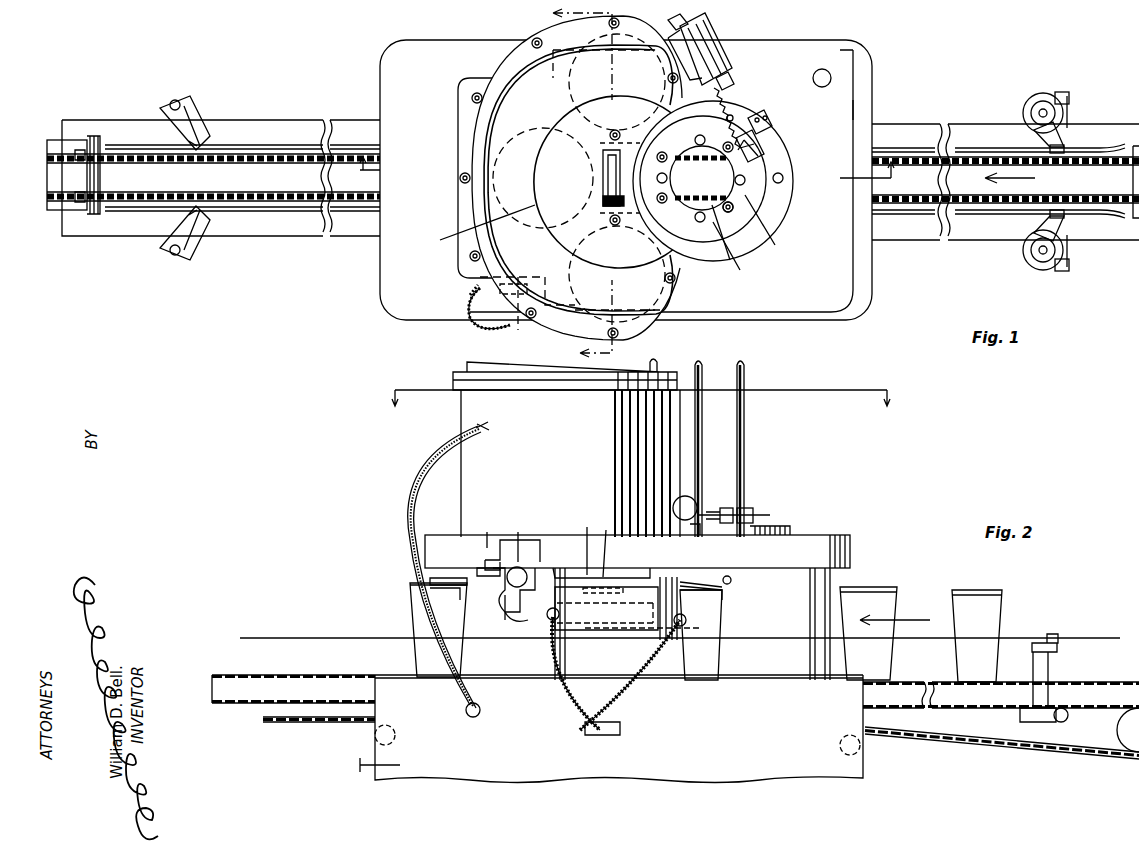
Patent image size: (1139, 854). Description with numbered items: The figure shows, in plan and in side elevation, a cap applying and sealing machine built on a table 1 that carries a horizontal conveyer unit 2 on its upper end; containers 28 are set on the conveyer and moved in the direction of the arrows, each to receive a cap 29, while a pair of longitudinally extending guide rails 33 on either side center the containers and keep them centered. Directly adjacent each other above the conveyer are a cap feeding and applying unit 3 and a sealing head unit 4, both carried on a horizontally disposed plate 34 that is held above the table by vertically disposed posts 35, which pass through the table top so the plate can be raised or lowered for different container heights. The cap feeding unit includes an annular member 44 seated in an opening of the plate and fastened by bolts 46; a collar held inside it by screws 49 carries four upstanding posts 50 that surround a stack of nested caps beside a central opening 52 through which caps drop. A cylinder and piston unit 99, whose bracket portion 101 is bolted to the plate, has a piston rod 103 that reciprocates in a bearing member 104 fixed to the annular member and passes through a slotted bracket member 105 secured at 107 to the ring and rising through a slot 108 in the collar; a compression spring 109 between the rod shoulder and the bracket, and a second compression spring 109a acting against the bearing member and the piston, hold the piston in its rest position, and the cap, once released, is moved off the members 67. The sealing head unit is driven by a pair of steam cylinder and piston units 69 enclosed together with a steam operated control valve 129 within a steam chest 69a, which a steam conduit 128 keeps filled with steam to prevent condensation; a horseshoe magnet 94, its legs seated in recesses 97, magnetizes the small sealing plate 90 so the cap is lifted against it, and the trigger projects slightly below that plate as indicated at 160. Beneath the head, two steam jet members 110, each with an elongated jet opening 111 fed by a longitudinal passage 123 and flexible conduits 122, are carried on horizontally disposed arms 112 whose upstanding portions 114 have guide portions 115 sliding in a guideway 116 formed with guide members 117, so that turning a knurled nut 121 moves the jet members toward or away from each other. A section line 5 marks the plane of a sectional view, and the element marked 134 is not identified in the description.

In FIG. 1, the table 1 is at (860, 108).
In FIG. 1, the horizontal conveyer unit 2 is at (967, 150).
In FIG. 2, the horizontal conveyer unit 2 is at (900, 682).
In FIG. 1, the cap feeding and applying unit 3 is at (626, 171).
In FIG. 1, the sealing head unit 4 is at (481, 231).
In FIG. 2, the sealing head unit 4 is at (647, 406).
In FIG. 1, the section line 5 is at (571, 185).
In FIG. 2, the container 28 is at (985, 608).
In FIG. 2, the cap 29 is at (720, 603).
In FIG. 1, the guide rails 33 is at (1020, 152).
In FIG. 2, the guide rails 33 is at (1068, 640).
In FIG. 1, the horizontally disposed plate 34 is at (855, 265).
In FIG. 2, the horizontally disposed plate 34 is at (805, 556).
In FIG. 1, the vertically disposed posts 35 is at (854, 75).
In FIG. 2, the vertically disposed posts 35 is at (815, 600).
In FIG. 1, the annular member 44 is at (770, 222).
In FIG. 2, the annular member 44 is at (780, 525).
In FIG. 1, the bolts 46 is at (784, 178).
In FIG. 1, the screws 49 is at (734, 210).
In FIG. 1, the upstanding posts 50 is at (745, 180).
In FIG. 2, the upstanding posts 50 is at (744, 425).
In FIG. 1, the central opening 52 is at (725, 243).
In FIG. 2, the lever 67 is at (745, 580).
In FIG. 1, the steam cylinder and piston units 69 is at (580, 255).
In FIG. 1, the steam chest 69a is at (508, 114).
In FIG. 2, the steam chest 69a is at (468, 507).
In FIG. 2, the small sealing plate 90 is at (599, 544).
In FIG. 1, the horseshoe magnet 94 is at (612, 170).
In FIG. 1, the recesses 97 is at (603, 200).
In FIG. 1, the cylinder and piston unit 99 is at (706, 35).
In FIG. 2, the cylinder and piston unit 99 is at (690, 497).
In FIG. 1, the bracket portion 101 is at (728, 80).
In FIG. 1, the piston rod 103 is at (730, 100).
In FIG. 1, the bearing member 104 is at (762, 116).
In FIG. 2, the bearing member 104 is at (722, 508).
In FIG. 1, the bracket member 105 is at (758, 146).
In FIG. 2, the bracket member 105 is at (748, 508).
In FIG. 1, the securing point 107 is at (755, 158).
In FIG. 1, the slot 108 is at (702, 178).
In FIG. 1, the compression spring 109 is at (720, 138).
In FIG. 1, the compression spring 109a is at (733, 116).
In FIG. 2, the steam jet members 110 is at (647, 593).
In FIG. 2, the jet opening 111 is at (606, 588).
In FIG. 2, the horizontally disposed arm 112 is at (620, 612).
In FIG. 2, the upstanding portion 114 is at (505, 613).
In FIG. 2, the guide portion 115 is at (510, 540).
In FIG. 2, the guideway 116 is at (485, 560).
In FIG. 2, the guide members 117 is at (488, 578).
In FIG. 1, the knurled nut 121 is at (520, 300).
In FIG. 2, the knurled nut 121 is at (515, 575).
In FIG. 2, the flexible conduit 122 is at (635, 690).
In FIG. 2, the longitudinal passage 123 is at (612, 630).
In FIG. 1, the steam conduit 128 is at (470, 300).
In FIG. 2, the steam conduit 128 is at (410, 470).
In FIG. 1, the control valve 129 is at (510, 134).
In FIG. 1, the fitting 134 is at (684, 18).
In FIG. 2, the trigger lower end 160 is at (580, 580).